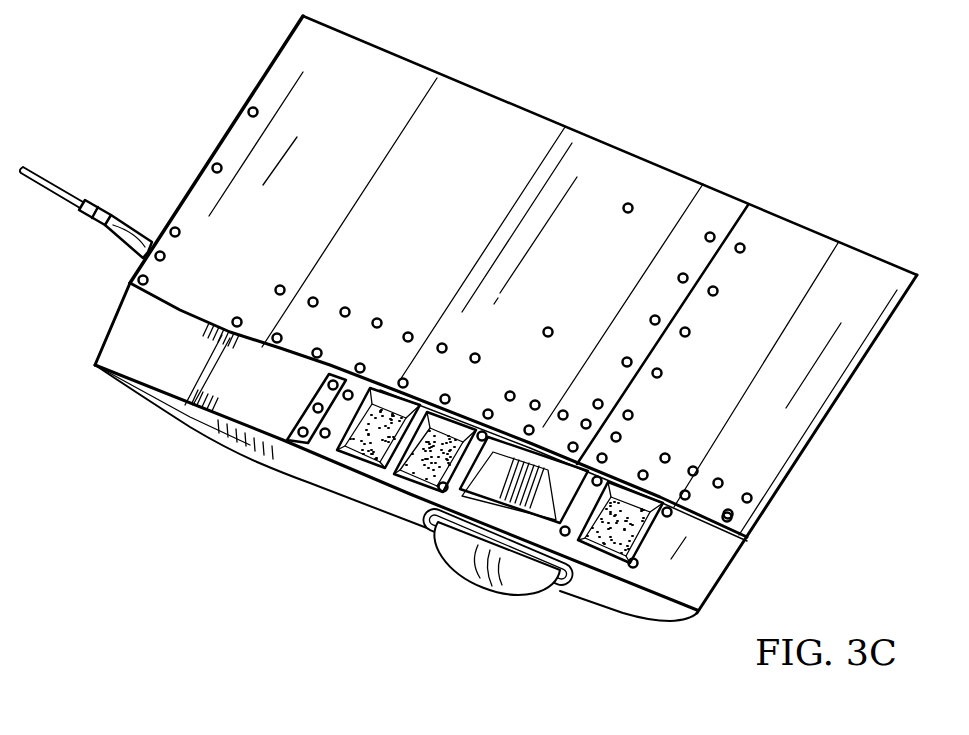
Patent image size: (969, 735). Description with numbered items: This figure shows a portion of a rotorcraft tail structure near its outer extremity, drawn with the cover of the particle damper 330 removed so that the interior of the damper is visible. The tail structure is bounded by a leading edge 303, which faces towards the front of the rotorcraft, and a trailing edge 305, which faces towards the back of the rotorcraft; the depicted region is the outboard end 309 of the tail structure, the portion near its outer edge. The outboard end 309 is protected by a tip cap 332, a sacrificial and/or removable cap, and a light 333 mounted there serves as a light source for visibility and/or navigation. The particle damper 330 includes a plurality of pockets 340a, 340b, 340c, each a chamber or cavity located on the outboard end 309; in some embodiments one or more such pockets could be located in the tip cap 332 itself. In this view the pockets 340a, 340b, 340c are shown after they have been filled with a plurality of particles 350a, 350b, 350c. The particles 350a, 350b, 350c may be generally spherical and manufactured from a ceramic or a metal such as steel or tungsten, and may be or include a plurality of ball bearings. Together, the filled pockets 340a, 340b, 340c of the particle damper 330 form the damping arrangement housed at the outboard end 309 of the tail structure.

The leading edge 303 is at (813, 440).
The trailing edge 305 is at (221, 137).
The outboard end 309 is at (307, 453).
The particle damper 330 is at (263, 432).
The tip cap 332 is at (708, 568).
The light 333 is at (463, 588).
The pocket 340a is at (348, 468).
The pocket 340b is at (407, 484).
The pocket 340c is at (636, 560).
The particles 350a is at (383, 412).
The particles 350b is at (418, 488).
The particles 350c is at (600, 550).